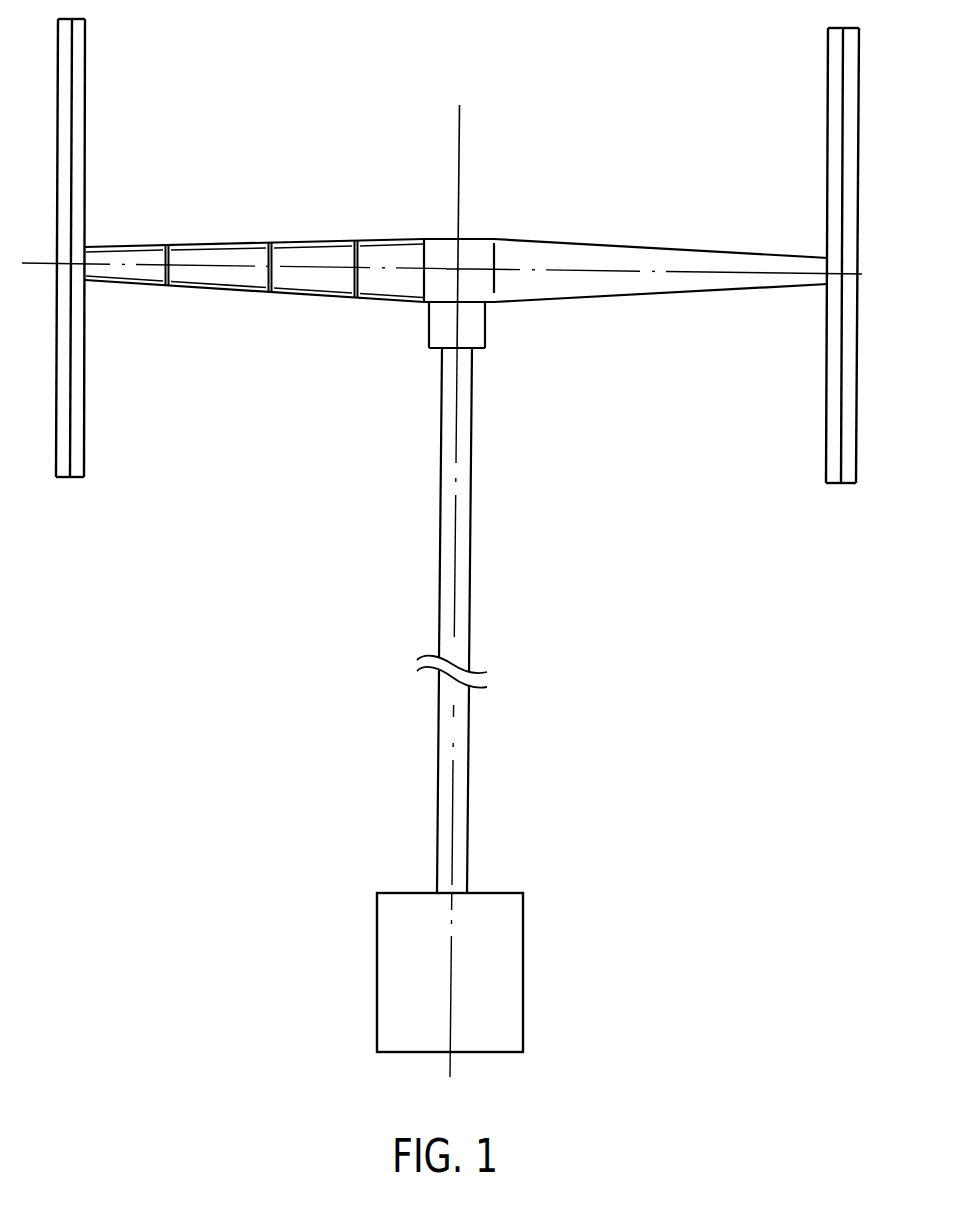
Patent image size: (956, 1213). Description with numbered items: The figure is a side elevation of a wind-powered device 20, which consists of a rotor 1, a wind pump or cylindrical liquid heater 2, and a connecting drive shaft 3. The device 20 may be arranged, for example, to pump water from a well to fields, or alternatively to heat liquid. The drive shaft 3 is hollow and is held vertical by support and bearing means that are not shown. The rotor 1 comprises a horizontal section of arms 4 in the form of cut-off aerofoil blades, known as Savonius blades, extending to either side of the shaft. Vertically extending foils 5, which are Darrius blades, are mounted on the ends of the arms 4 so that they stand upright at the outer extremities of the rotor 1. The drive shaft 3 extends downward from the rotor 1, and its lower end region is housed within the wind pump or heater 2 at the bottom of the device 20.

The device 20 is at (547, 113).
The rotor 1 is at (244, 307).
The wind pump or cylindrical liquid heater 2 is at (523, 946).
The connecting drive shaft 3 is at (470, 562).
The arms 4 is at (320, 240).
The vertically extending foils 5 is at (86, 157).